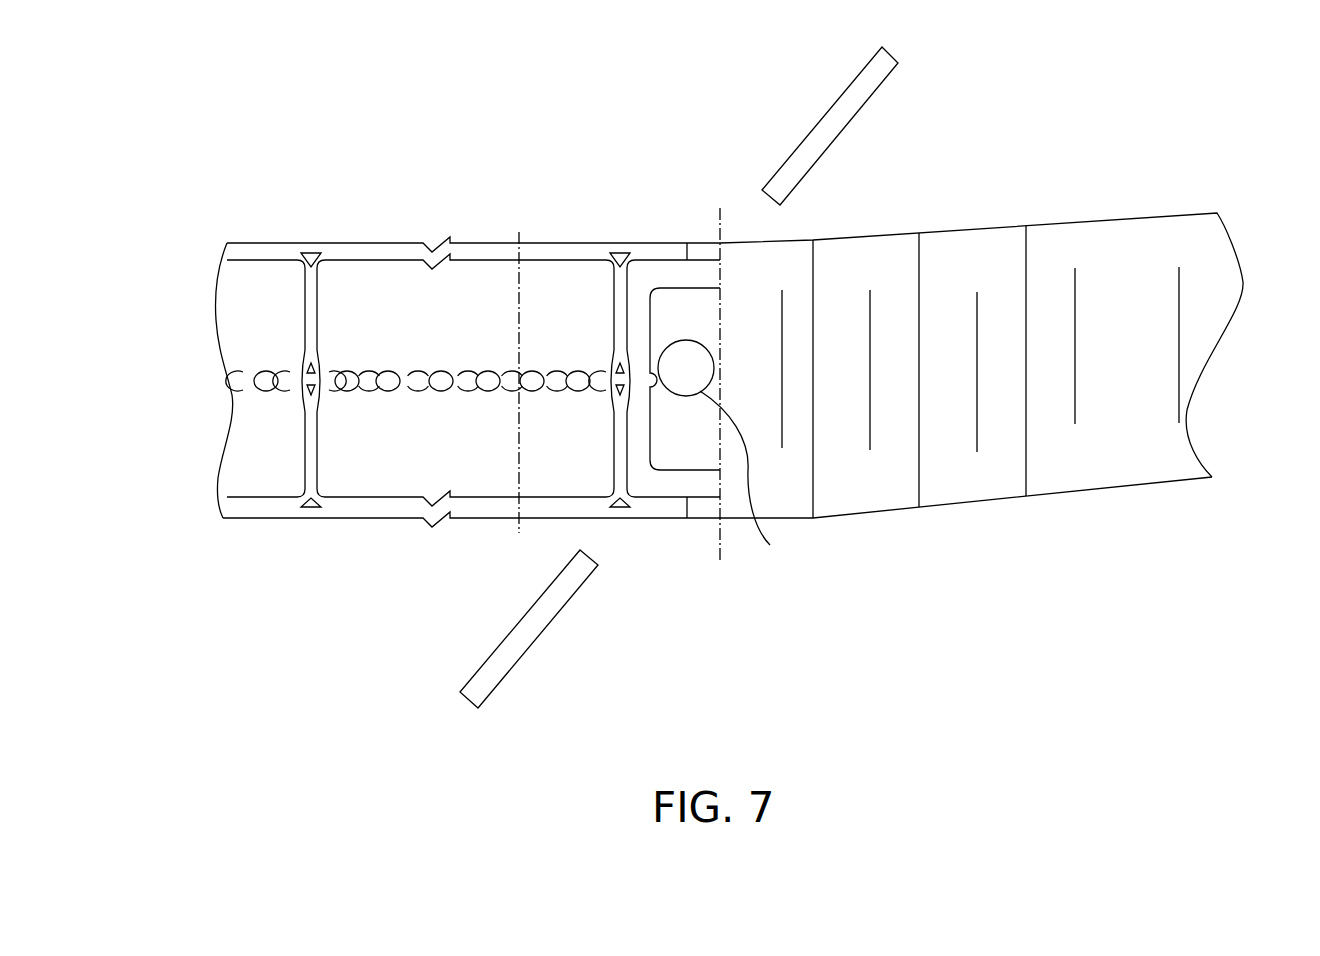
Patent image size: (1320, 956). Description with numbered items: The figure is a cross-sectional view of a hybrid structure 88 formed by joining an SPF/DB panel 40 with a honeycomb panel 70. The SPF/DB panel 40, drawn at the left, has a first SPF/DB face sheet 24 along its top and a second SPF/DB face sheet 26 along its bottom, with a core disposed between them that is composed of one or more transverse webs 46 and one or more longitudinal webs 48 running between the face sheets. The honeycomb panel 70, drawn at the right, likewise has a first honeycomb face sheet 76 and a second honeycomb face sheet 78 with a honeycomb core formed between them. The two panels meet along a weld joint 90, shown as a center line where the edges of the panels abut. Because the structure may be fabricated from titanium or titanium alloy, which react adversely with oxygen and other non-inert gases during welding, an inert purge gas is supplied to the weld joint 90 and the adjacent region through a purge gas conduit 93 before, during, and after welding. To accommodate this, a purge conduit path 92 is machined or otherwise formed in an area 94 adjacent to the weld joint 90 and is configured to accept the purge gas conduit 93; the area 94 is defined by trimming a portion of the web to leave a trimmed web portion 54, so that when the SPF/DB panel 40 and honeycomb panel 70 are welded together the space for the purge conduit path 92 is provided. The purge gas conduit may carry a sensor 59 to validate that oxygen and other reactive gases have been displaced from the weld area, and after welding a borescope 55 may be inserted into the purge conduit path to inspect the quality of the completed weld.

The hybrid structure 88 is at (241, 146).
The first SPF/DB face sheet 24 is at (497, 250).
The second SPF/DB face sheet 26 is at (353, 507).
The SPF/DB panel 40 is at (348, 252).
The transverse web 46 is at (560, 280).
The longitudinal web 48 is at (623, 253).
The area adjacent to the weld joint 94 is at (680, 318).
The trimmed web portion 54 is at (663, 470).
The purge conduit path 92 is at (702, 346).
The purge gas conduit 93 is at (770, 545).
The weld joint 90 is at (720, 208).
The sensor 59 is at (823, 130).
The borescope 55 is at (519, 632).
The honeycomb panel 70 is at (1185, 213).
The first honeycomb face sheet 76 is at (983, 228).
The second honeycomb face sheet 78 is at (1075, 490).